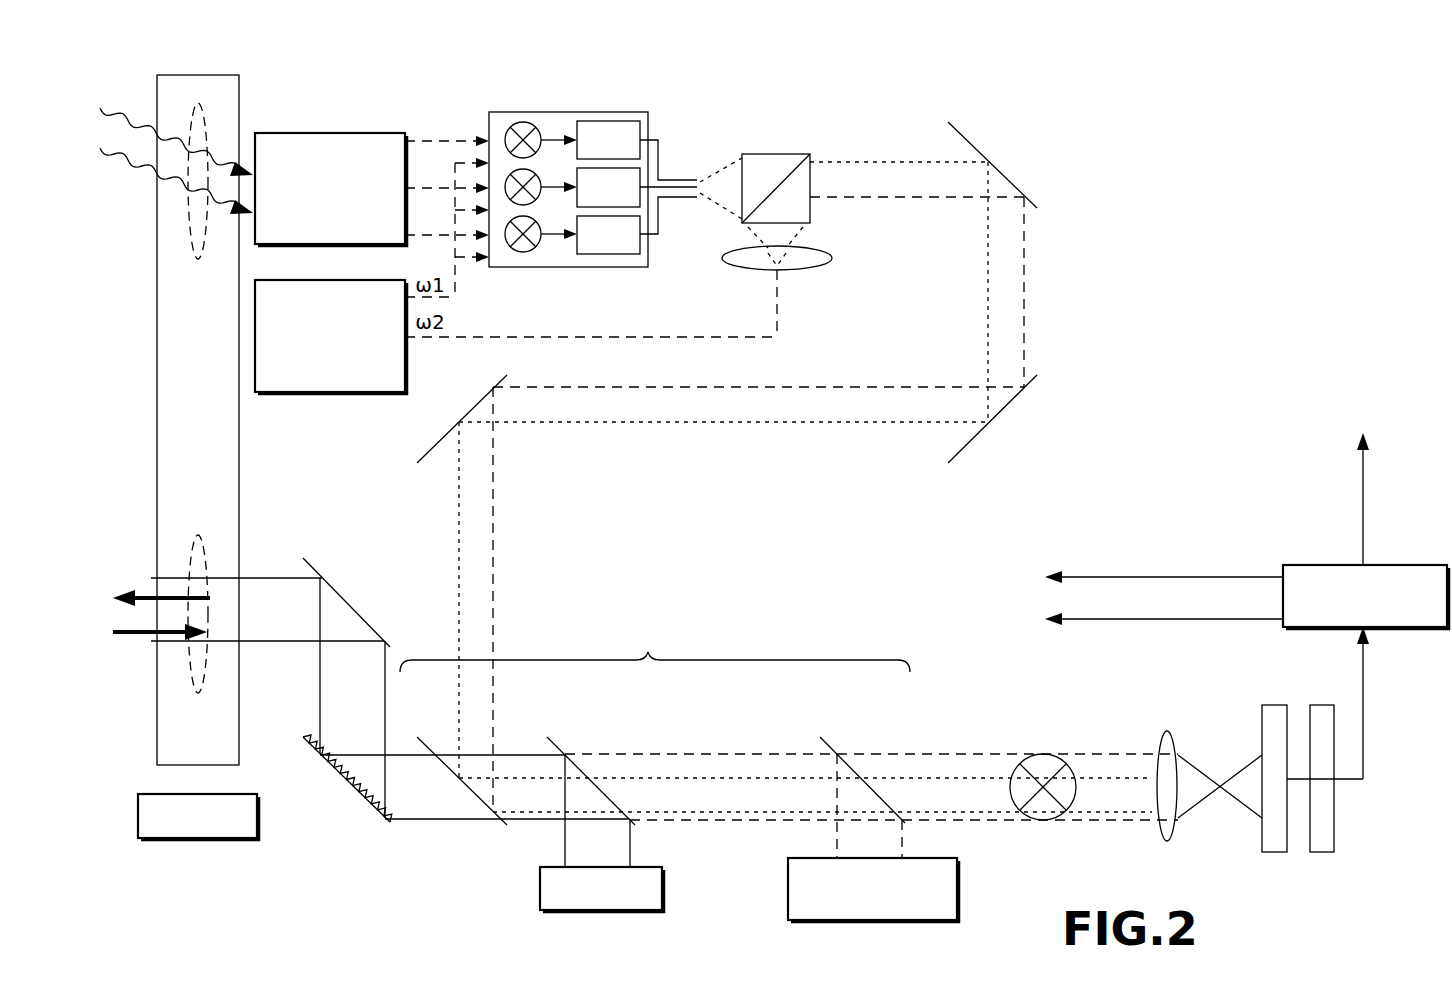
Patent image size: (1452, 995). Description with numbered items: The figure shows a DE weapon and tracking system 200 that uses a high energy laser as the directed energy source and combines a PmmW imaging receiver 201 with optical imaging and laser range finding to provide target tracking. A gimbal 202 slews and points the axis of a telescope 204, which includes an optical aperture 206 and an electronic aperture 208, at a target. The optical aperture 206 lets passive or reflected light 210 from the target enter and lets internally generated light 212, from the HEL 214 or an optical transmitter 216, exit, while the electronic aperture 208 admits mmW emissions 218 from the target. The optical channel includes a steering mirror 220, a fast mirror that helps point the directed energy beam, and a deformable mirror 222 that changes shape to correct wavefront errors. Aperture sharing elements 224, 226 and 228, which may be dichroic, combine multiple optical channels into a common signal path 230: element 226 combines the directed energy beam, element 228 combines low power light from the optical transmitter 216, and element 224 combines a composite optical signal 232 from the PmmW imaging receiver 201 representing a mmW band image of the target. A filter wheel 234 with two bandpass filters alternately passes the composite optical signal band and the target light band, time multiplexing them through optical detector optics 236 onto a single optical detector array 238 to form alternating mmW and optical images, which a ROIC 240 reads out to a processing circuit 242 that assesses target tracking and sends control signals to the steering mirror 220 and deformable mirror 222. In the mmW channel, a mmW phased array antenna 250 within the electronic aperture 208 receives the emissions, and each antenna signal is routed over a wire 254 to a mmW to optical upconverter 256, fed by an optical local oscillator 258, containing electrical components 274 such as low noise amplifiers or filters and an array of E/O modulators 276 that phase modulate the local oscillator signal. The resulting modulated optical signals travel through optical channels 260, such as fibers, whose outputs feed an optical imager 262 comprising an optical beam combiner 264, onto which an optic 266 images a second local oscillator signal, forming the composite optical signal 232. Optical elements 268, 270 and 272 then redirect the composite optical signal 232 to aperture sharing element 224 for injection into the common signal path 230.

The DE weapon and tracking system 200 is at (1163, 428).
The PmmW imaging receiver 201 is at (820, 312).
The gimbal 202 is at (197, 840).
The telescope 204 is at (198, 420).
The optical aperture 206 is at (198, 693).
The electronic aperture 208 is at (197, 263).
The light 210 is at (133, 635).
The internally generated light 212 is at (143, 592).
The HEL 214 is at (540, 886).
The optical transmitter 216 is at (788, 887).
The mmW emissions 218 is at (150, 172).
The steering mirror 220 is at (350, 600).
The deformable mirror 222 is at (370, 803).
The aperture sharing element 224 is at (430, 737).
The aperture sharing element 226 is at (560, 738).
The aperture sharing element 228 is at (832, 748).
The common signal path 230 is at (655, 646).
The composite optical signal 232 is at (493, 588).
The filter wheel 234 is at (1042, 754).
The optical detector optics 236 is at (1167, 730).
The optical detector array 238 is at (1275, 853).
The ROIC 240 is at (1322, 853).
The processing circuit 242 is at (1424, 630).
The mmW phased array antenna 250 is at (330, 133).
The wire 254 is at (442, 138).
The mmW to optical upconverter 256 is at (637, 114).
The optical local oscillator 258 is at (330, 395).
The optical channels 260 is at (681, 176).
The optical imager 262 is at (840, 135).
The optical beam combiner 264 is at (777, 153).
The optic 266 is at (832, 256).
The optical element 268 is at (1003, 177).
The optical element 270 is at (970, 438).
The mirror 272 is at (445, 430).
The electrical components 274 is at (525, 255).
The electro-optical (E/O) modulators 276 is at (627, 255).